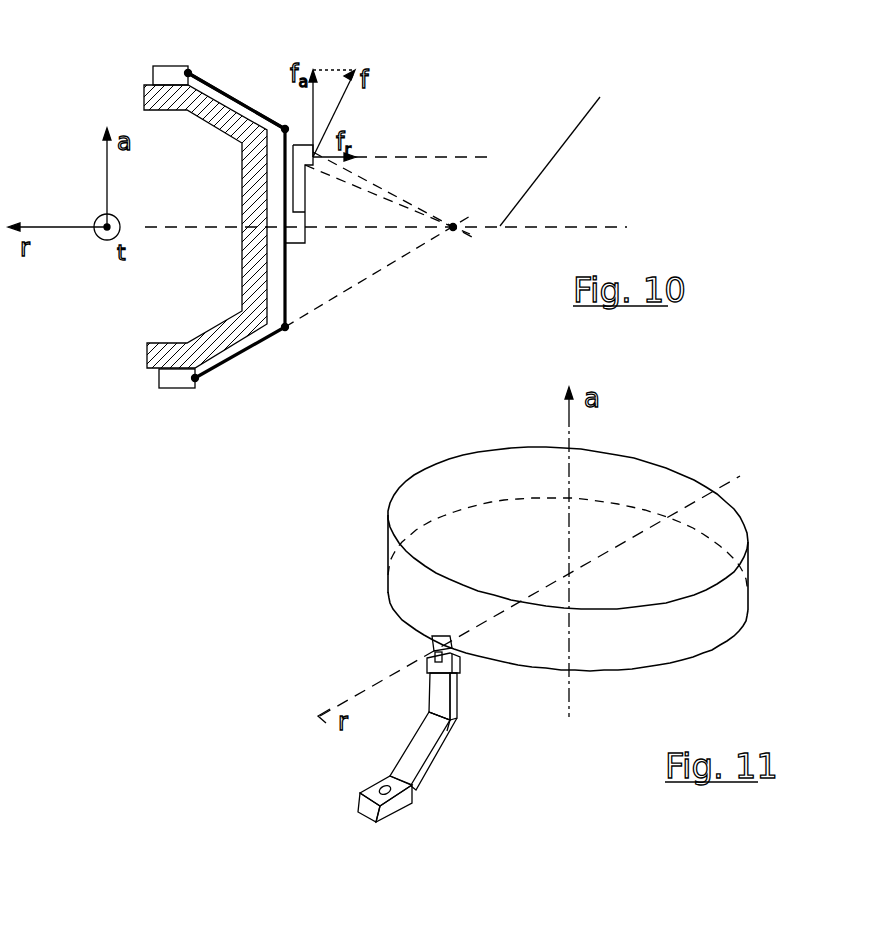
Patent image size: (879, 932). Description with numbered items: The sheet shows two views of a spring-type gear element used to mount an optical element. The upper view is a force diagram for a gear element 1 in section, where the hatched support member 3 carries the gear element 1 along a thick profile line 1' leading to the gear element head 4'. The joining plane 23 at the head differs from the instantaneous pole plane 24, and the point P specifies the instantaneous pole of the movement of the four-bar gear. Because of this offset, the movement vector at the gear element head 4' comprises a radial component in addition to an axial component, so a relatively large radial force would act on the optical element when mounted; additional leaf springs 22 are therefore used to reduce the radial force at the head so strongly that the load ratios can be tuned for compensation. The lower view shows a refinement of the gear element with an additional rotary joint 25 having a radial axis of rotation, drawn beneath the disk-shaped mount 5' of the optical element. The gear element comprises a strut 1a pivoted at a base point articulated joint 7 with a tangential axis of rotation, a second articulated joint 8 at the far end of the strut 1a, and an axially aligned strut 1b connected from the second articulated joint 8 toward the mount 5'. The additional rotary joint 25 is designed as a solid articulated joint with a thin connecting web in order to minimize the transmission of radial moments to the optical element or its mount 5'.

In FIG. 10, the gear element 1 is at (244, 251).
In FIG. 10, the tool edge line 1' is at (236, 64).
In FIG. 10, the support member 3 is at (255, 198).
In FIG. 10, the gear element head 4' is at (281, 121).
In FIG. 10, the additional leaf springs 22 is at (303, 195).
In FIG. 10, the joining plane 23 is at (433, 157).
In FIG. 10, the instantaneous pole P is at (453, 226).
In FIG. 10, the instantaneous pole plane 24 is at (561, 147).
In FIG. 11, the mount 5' is at (591, 559).
In FIG. 11, the additional rotary joint 25 is at (435, 653).
In FIG. 11, the radial torsion spring 1b is at (445, 702).
In FIG. 11, the second articulated joint 8 is at (452, 720).
In FIG. 11, the axial torsion spring 1a is at (410, 762).
In FIG. 11, the base point articulated joint 7 is at (412, 787).